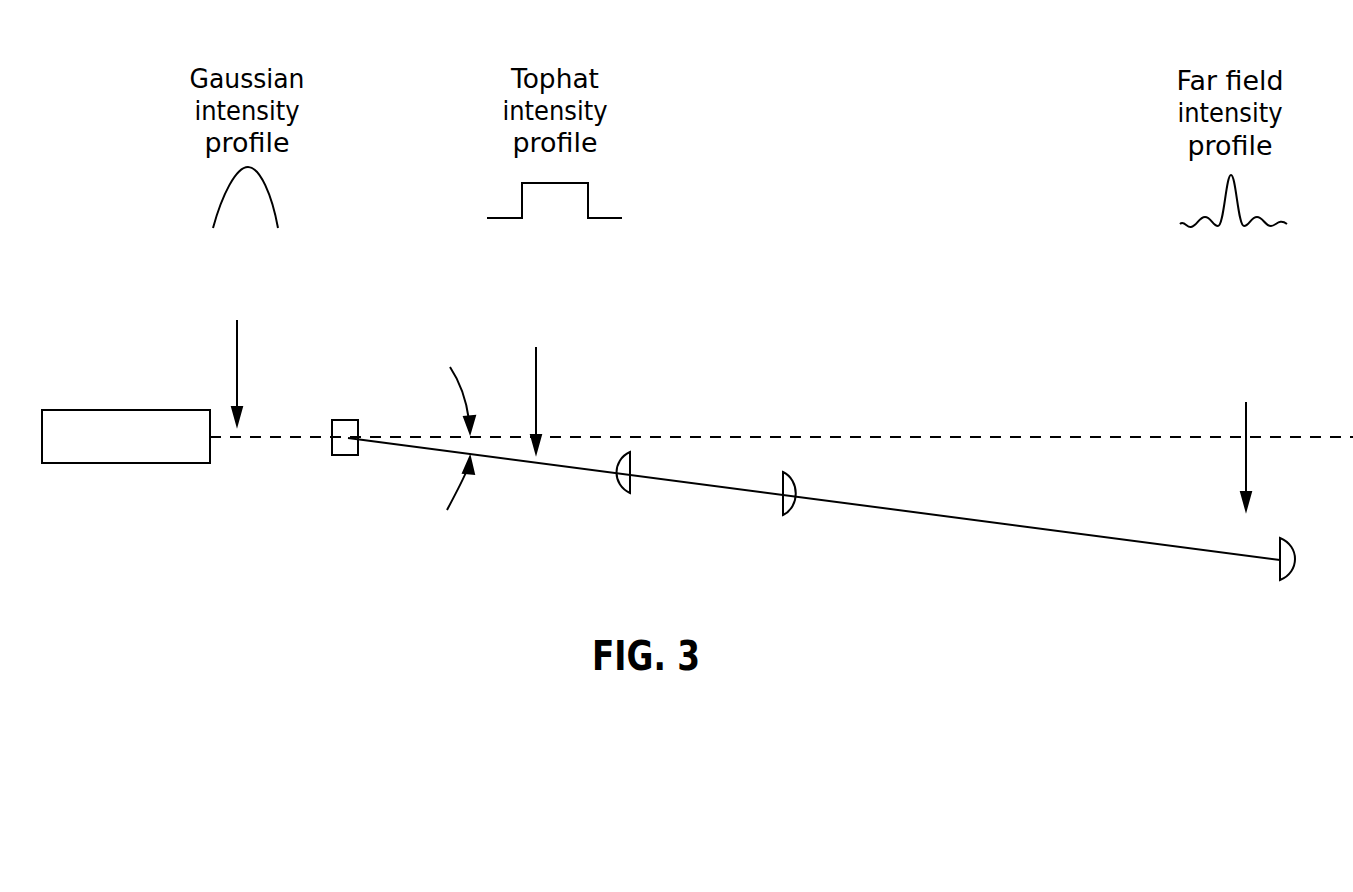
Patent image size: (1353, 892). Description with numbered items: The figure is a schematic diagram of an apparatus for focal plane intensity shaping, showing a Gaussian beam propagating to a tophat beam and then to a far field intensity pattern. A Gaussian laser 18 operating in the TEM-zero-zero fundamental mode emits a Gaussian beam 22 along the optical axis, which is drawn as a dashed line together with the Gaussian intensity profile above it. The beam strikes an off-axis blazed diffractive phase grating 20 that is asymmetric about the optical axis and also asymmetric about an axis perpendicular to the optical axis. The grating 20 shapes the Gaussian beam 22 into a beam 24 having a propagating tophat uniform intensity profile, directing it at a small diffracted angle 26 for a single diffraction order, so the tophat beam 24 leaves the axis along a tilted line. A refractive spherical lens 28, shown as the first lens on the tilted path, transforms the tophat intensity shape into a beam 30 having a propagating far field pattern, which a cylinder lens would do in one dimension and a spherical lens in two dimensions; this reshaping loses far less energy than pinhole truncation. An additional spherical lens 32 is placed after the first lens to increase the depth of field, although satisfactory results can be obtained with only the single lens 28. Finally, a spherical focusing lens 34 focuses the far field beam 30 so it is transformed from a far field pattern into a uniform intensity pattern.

The Gaussian laser 18 is at (100, 410).
The off-axis blazed diffractive phase grating 20 is at (348, 455).
The Gaussian beam 22 is at (237, 355).
The beam with non-Gaussian intensity shape 24 is at (537, 381).
The diffracted angle 26 is at (444, 456).
The lens 28 is at (616, 482).
The far field pattern beam 30 is at (1246, 439).
The additional lens 32 is at (783, 507).
The spherical focusing lens 34 is at (1280, 572).